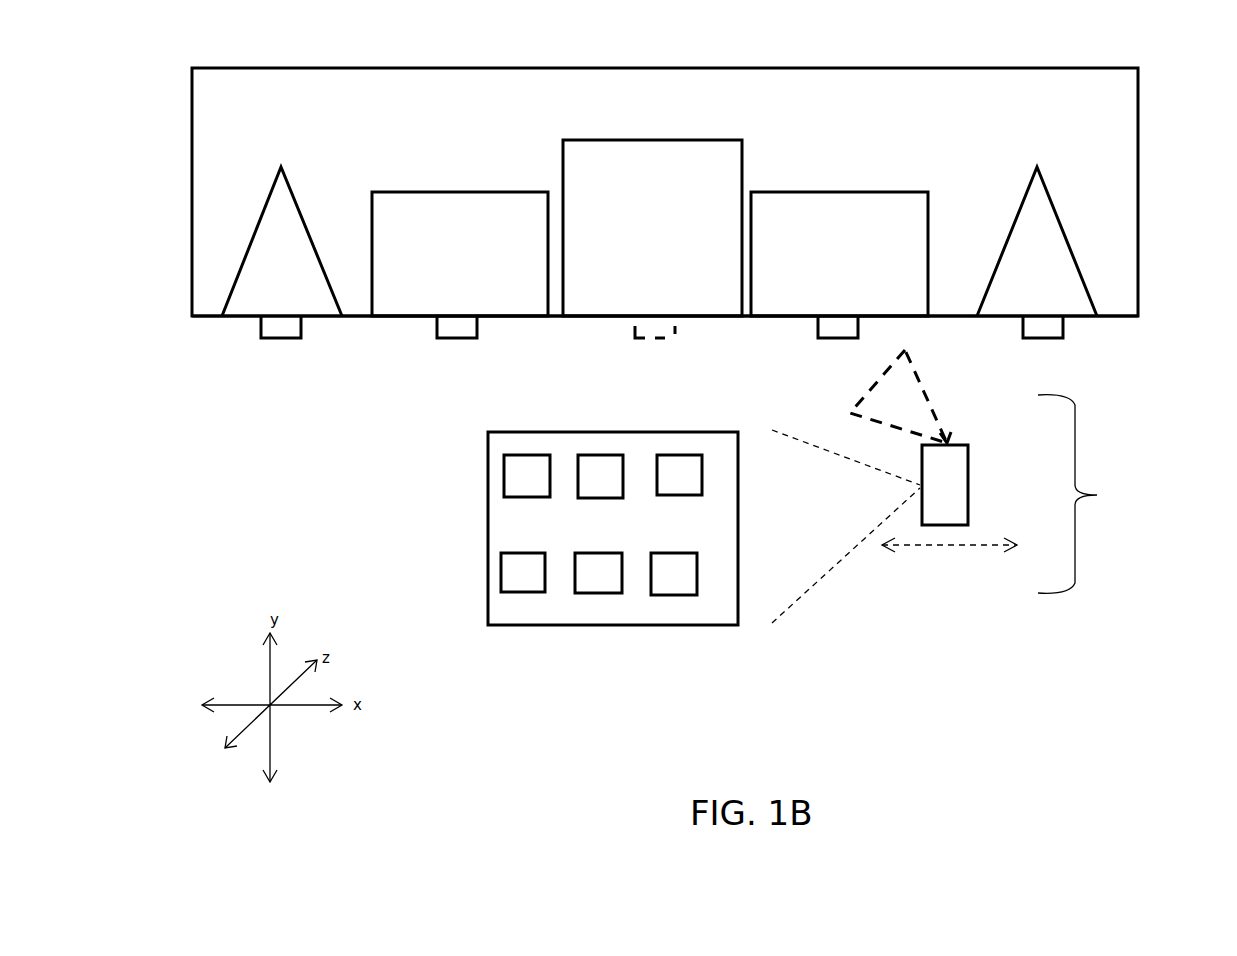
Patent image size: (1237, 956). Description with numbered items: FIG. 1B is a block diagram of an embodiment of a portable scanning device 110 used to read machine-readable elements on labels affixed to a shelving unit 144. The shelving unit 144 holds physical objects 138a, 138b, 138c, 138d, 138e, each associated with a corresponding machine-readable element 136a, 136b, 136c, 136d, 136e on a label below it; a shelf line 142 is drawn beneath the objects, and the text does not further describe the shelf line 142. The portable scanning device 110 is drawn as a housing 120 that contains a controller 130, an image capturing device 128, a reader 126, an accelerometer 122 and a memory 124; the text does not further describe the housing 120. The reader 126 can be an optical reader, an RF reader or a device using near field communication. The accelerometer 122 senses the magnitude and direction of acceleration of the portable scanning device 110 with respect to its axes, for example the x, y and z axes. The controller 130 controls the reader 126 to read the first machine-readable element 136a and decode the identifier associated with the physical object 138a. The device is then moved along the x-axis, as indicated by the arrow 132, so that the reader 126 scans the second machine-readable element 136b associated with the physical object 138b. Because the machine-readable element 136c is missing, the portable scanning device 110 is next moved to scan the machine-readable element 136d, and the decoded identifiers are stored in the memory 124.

The portable scanning device 110 is at (1097, 495).
The base station / wearable display 120 is at (710, 582).
The accelerometer 122 is at (600, 593).
The memory 124 is at (500, 572).
The reader 126 is at (503, 475).
The image capturing device 128 is at (598, 455).
The controller 130 is at (679, 455).
The arrow 132 is at (987, 547).
The first machine-readable element 136a is at (278, 338).
The second machine-readable element 136b is at (447, 338).
The machine-readable element 136c is at (655, 337).
The machine-readable element 136d is at (845, 338).
The machine-readable element 136e is at (1047, 340).
The physical object 138a is at (312, 237).
The physical object 138b is at (462, 190).
The physical object 138c is at (738, 140).
The physical object 138d is at (840, 192).
The physical object 138e is at (1037, 163).
The surface / floor 142 is at (1152, 360).
The shelving unit 144 is at (1103, 173).